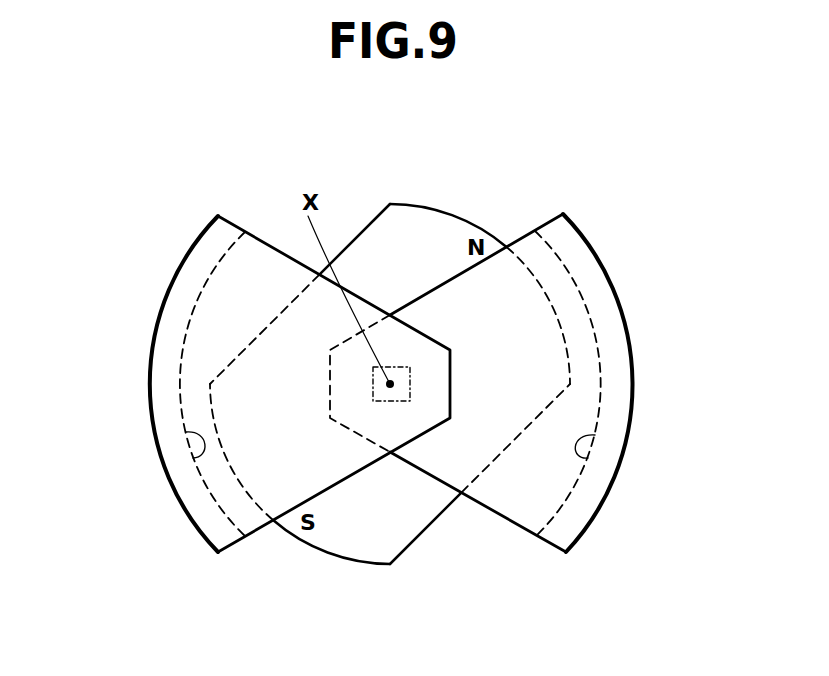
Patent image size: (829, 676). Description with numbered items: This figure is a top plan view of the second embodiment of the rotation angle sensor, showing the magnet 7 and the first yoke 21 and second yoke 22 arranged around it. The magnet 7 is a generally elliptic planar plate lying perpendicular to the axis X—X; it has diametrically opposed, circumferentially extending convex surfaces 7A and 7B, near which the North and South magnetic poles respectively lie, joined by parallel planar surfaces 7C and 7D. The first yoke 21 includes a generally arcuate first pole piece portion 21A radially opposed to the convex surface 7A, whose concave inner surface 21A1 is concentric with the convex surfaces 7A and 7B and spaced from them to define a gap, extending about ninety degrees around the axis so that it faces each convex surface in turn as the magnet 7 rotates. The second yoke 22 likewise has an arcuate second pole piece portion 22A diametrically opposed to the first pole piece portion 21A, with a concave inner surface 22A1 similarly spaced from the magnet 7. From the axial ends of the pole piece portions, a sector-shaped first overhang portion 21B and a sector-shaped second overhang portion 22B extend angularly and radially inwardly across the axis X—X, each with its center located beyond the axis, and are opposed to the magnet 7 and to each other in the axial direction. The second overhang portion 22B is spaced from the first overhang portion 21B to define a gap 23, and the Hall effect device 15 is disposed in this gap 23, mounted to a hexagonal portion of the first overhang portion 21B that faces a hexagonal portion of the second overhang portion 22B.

The magnet 7 is at (390, 362).
The convex surface 7A is at (491, 233).
The convex surface 7B is at (298, 540).
The planar surface 7C is at (440, 520).
The planar surface 7D is at (363, 227).
The Hall effect device 15 is at (394, 403).
The first yoke 21 is at (568, 326).
The first pole piece portion 21A is at (592, 279).
The concave inner surface 21A1 is at (597, 459).
The first overhang portion 21B is at (440, 307).
The second yoke 22 is at (240, 364).
The second pole piece portion 22A is at (165, 337).
The concave inner surface 22A1 is at (193, 456).
The second overhang portion 22B is at (277, 337).
The gap 23 is at (402, 342).